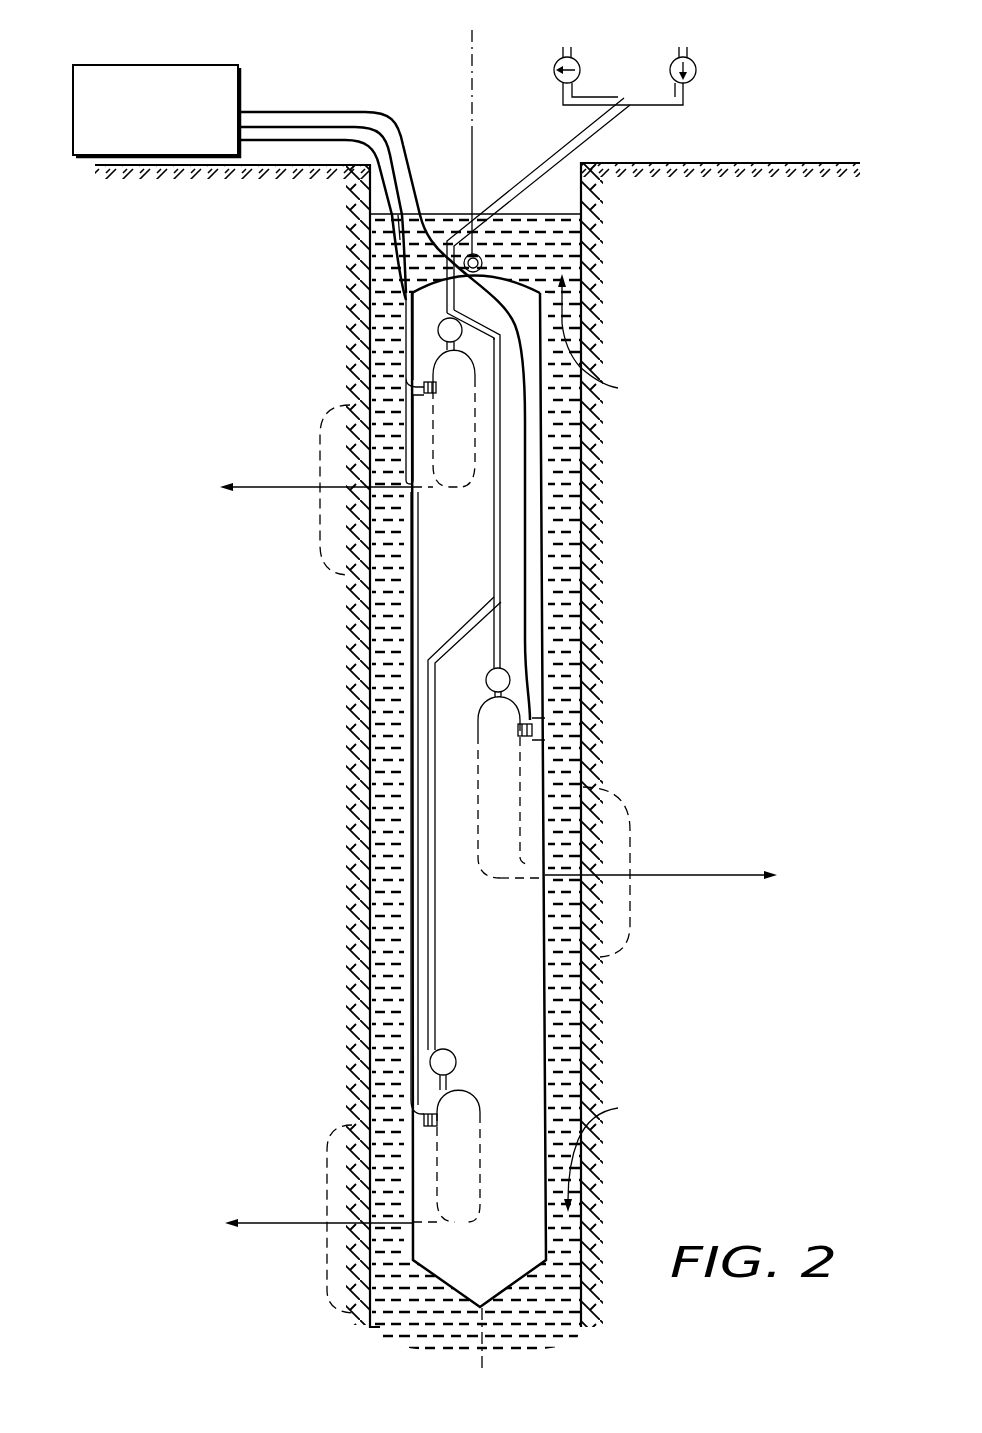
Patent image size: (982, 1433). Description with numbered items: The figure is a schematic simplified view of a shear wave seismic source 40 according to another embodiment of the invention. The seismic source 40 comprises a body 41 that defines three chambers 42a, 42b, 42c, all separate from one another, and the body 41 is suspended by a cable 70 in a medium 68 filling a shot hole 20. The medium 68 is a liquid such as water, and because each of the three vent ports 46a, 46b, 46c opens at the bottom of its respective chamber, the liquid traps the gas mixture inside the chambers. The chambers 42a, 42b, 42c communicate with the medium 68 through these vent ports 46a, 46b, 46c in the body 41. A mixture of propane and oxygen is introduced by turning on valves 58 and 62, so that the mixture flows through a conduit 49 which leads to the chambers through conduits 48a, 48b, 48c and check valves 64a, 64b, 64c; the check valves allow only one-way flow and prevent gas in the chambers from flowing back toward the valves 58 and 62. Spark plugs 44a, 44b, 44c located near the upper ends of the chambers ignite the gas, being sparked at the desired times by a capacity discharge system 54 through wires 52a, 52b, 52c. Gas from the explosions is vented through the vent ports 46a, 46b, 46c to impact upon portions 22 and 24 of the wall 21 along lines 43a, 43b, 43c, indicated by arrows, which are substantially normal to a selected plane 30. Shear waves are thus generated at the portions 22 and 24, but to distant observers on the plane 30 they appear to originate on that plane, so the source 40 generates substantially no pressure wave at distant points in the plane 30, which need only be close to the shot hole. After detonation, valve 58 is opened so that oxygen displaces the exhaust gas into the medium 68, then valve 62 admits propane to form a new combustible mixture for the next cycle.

The shot hole 20 is at (424, 1325).
The wall 21 is at (366, 706).
The portion of wall 22 is at (606, 872).
The portion of wall 24 is at (342, 859).
The selected plane 30 is at (478, 702).
The seismic source 40 is at (420, 266).
The body 41 is at (517, 938).
The chamber 42a is at (448, 437).
The chamber 42b is at (500, 798).
The chamber 42c is at (450, 1161).
The line 43a is at (290, 487).
The line 43b is at (682, 875).
The line 43c is at (295, 1223).
The spark plug 44a is at (424, 389).
The spark plug 44b is at (537, 731).
The spark plug 44c is at (422, 1121).
The vent port 46a is at (410, 489).
The vent port 46b is at (547, 877).
The vent port 46c is at (413, 1226).
The conduit 48a is at (443, 344).
The conduit 48b is at (497, 622).
The conduit 48c is at (436, 968).
The conduit 49 is at (600, 130).
The wire 52a is at (267, 123).
The wire 52b is at (524, 582).
The wire 52c is at (283, 141).
The capacity discharge system 54 is at (118, 68).
The valve 58 is at (564, 53).
The valve 62 is at (688, 53).
The check valve 64a is at (440, 325).
The check valve 64b is at (507, 678).
The check valve 64c is at (433, 1063).
The medium 68 is at (606, 743).
The cable 70 is at (472, 155).